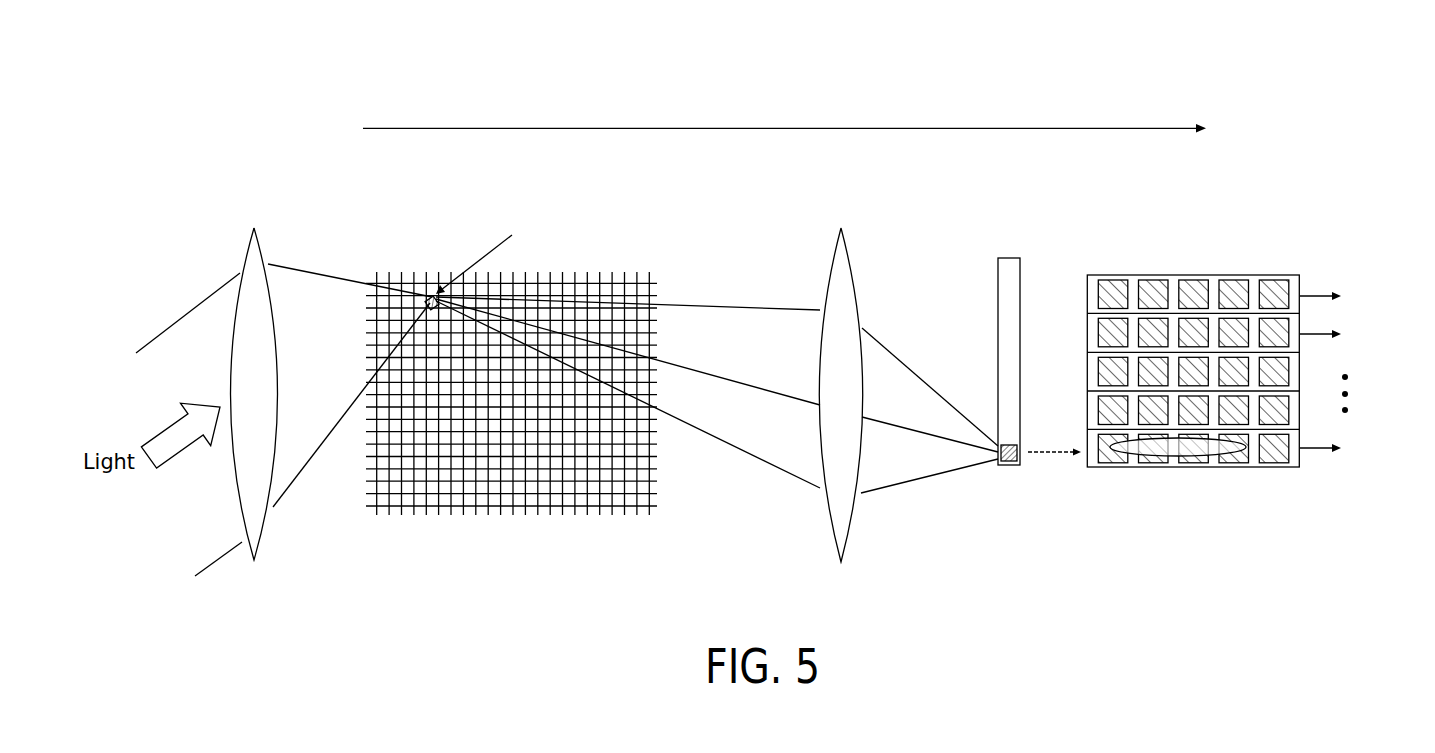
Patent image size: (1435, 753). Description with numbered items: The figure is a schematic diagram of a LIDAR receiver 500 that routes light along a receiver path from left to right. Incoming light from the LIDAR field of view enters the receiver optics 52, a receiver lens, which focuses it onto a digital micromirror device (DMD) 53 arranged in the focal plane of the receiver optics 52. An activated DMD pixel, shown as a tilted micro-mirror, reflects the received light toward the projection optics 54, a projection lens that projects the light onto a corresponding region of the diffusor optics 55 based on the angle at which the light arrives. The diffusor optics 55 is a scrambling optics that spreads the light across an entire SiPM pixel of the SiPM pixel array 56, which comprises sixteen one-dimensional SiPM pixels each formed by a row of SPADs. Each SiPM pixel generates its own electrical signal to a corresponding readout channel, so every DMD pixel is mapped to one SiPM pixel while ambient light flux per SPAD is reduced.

The LIDAR receiver 500 is at (145, 75).
The receiver optics 52 is at (254, 228).
The digital micromirror device (DMD) 53 is at (393, 283).
The projection optics 54 is at (841, 228).
The diffusor optics 55 is at (1008, 258).
The SiPM pixel array 56 is at (1193, 250).